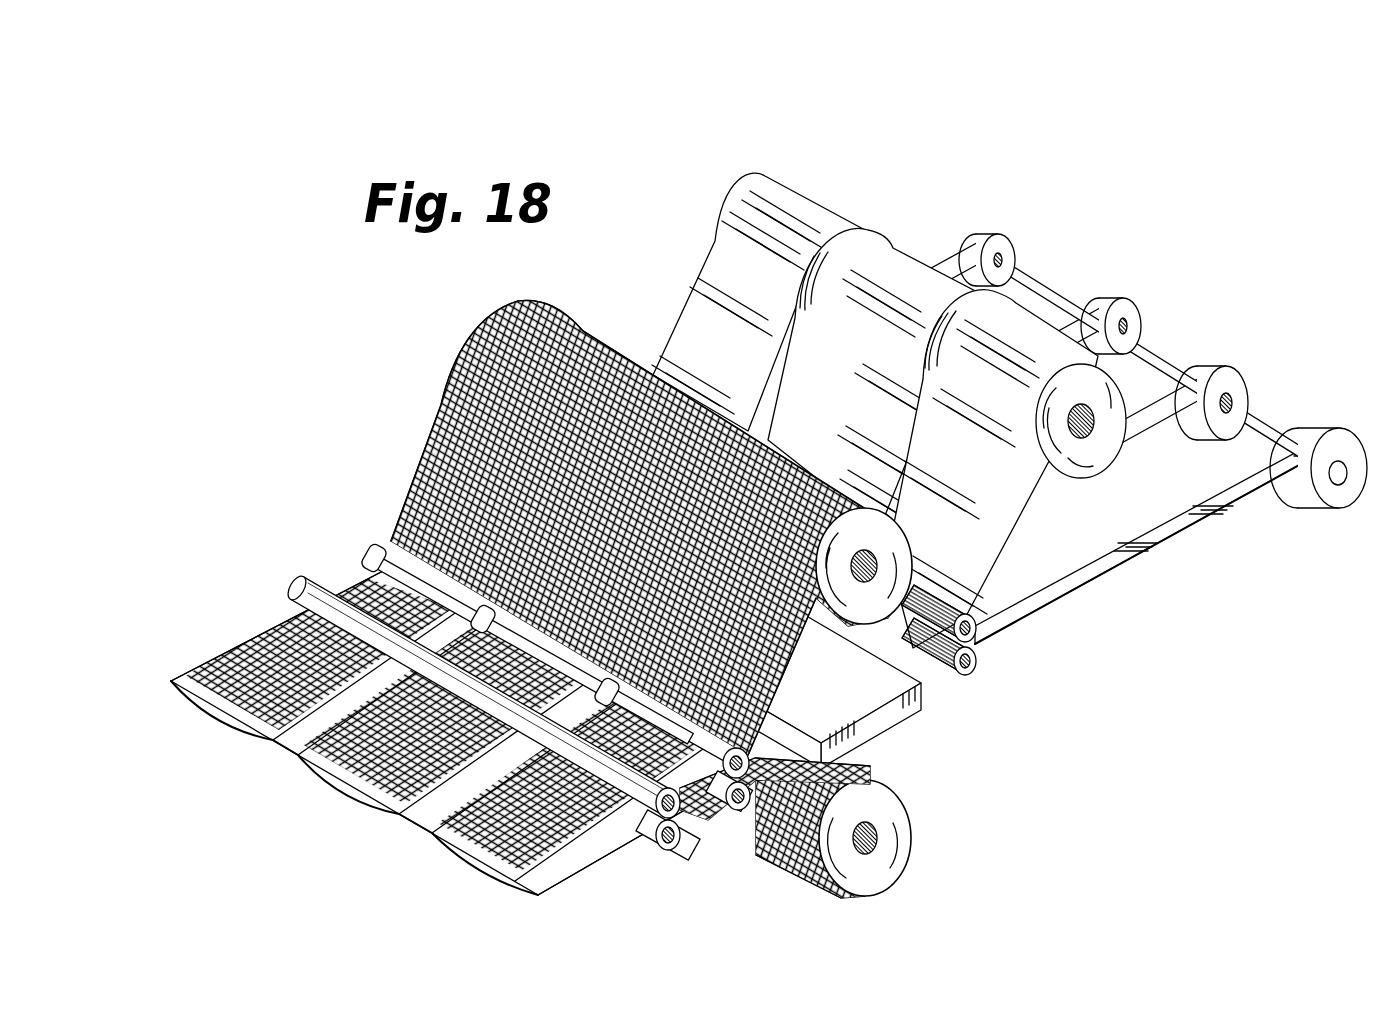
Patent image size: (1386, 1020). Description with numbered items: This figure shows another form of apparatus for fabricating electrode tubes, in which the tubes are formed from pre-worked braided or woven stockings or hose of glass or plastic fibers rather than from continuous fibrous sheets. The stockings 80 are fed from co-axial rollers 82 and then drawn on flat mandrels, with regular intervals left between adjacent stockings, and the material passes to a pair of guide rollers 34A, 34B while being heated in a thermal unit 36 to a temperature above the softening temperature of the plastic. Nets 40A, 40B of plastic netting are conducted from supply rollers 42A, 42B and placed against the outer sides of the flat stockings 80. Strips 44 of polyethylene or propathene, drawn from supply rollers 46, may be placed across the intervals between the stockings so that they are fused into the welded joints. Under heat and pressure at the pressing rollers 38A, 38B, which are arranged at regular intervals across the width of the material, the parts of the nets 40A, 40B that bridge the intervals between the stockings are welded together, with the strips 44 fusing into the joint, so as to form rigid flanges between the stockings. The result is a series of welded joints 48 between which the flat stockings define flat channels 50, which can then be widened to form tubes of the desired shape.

The guide roller 34A is at (977, 622).
The guide roller 34B is at (970, 660).
The thermal unit 36 is at (907, 703).
The pressing roller 38A is at (465, 603).
The pressing roller 38B is at (728, 805).
The plastic net sheet 40A is at (433, 393).
The plastic net sheet 40B is at (853, 755).
The supply roller 42A is at (850, 583).
The supply roller 42B is at (893, 818).
The plastic strip 44 is at (968, 226).
The supply roller 46 is at (1006, 247).
The welded joint 48 is at (220, 648).
The flat channel 50 is at (220, 730).
The stocking 80 is at (780, 175).
The co-axial roller 82 is at (853, 230).